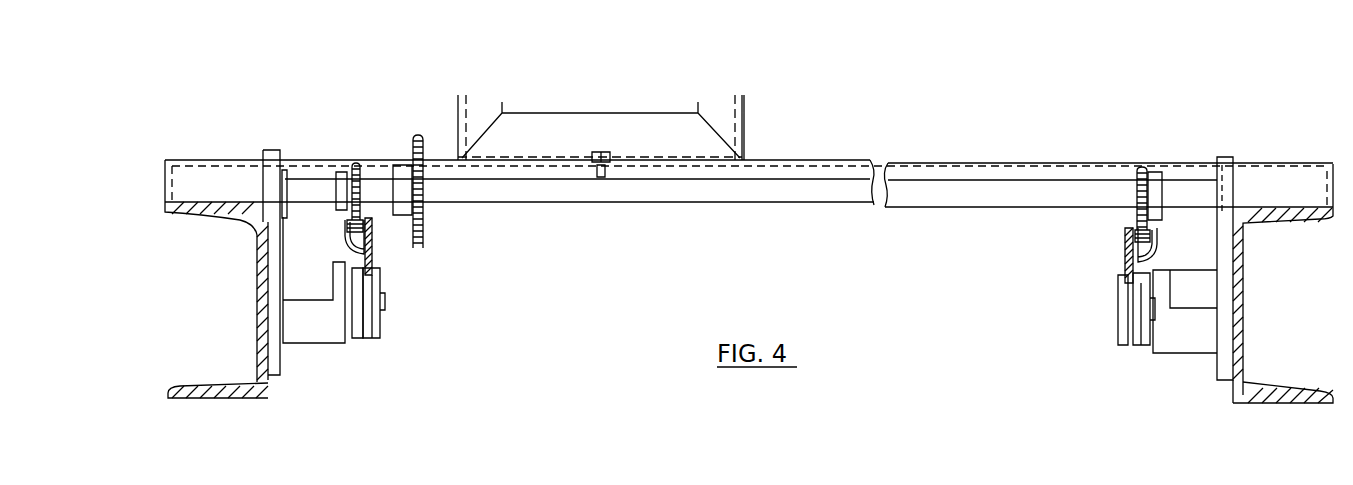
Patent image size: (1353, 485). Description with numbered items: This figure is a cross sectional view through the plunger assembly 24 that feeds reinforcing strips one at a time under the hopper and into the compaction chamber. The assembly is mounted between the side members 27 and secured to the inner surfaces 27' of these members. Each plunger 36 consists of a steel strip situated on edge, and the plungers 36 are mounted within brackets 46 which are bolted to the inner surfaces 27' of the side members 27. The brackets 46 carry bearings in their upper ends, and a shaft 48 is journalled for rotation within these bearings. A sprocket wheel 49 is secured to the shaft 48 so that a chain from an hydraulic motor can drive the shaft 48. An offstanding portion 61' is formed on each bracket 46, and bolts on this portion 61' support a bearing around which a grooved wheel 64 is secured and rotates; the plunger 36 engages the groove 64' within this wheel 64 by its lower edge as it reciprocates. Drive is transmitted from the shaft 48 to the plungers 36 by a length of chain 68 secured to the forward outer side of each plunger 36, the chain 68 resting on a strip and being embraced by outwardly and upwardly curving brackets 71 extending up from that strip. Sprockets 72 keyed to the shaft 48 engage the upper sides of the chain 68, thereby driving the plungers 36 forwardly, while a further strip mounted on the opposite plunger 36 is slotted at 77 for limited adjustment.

The plunger assembly 24 is at (1115, 253).
The side member 27 is at (749, 302).
The inner surface 27' is at (750, 405).
The plunger 36 is at (373, 255).
The bracket 46 is at (263, 171).
The shaft 48 is at (705, 192).
The sprocket wheel 49 is at (425, 238).
The offstanding portion 61' is at (750, 285).
The grooved wheel 64 is at (740, 306).
The groove 64' is at (759, 330).
The chain 68 is at (368, 218).
The bracket 71 is at (348, 242).
The sprocket 72 is at (1141, 167).
The slot 77 is at (373, 166).